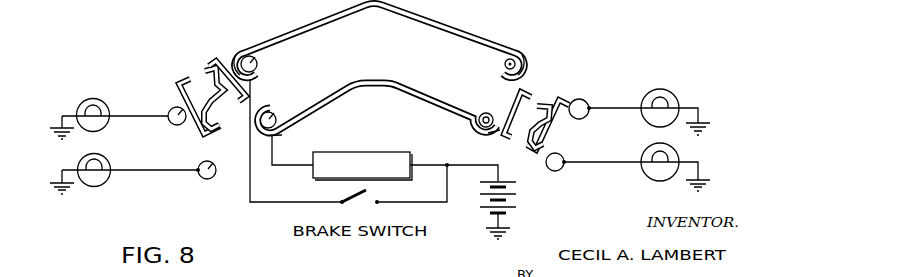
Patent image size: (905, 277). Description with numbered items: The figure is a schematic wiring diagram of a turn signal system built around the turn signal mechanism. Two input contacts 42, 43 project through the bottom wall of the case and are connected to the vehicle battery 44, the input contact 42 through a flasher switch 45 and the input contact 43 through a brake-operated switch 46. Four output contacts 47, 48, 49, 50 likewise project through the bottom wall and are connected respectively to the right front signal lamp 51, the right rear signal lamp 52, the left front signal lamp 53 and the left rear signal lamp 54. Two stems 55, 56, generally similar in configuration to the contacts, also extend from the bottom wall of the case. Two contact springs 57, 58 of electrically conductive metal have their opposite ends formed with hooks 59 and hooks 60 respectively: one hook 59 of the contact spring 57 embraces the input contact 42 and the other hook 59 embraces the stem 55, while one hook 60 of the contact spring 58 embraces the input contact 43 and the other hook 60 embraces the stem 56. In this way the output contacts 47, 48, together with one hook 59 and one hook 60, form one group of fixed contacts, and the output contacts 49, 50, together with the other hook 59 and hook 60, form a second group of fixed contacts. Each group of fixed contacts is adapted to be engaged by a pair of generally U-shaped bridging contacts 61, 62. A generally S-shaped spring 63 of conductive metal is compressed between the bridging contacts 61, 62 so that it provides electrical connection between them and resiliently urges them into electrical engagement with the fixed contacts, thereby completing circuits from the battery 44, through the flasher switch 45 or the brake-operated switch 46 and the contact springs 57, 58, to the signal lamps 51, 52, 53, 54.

The input contact 42 is at (275, 111).
The input contact 43 is at (262, 64).
The vehicle battery 44 is at (520, 198).
The flasher switch 45 is at (370, 153).
The brake-operated switch 46 is at (377, 196).
The output contact 47 is at (560, 171).
The output contact 48 is at (586, 98).
The output contact 49 is at (203, 182).
The output contact 50 is at (169, 109).
The right front signal lamp 51 is at (650, 173).
The right rear signal lamp 52 is at (663, 89).
The left front signal lamp 53 is at (107, 181).
The left rear signal lamp 54 is at (94, 98).
The stem 55 is at (480, 112).
The stem 56 is at (495, 64).
The contact spring 57 is at (396, 88).
The contact spring 58 is at (440, 24).
The hook 59 is at (290, 134).
The hook 60 is at (242, 52).
The bridging contact 61 is at (181, 82).
The bridging contact 62 is at (216, 61).
The S-shaped spring 63 is at (211, 76).